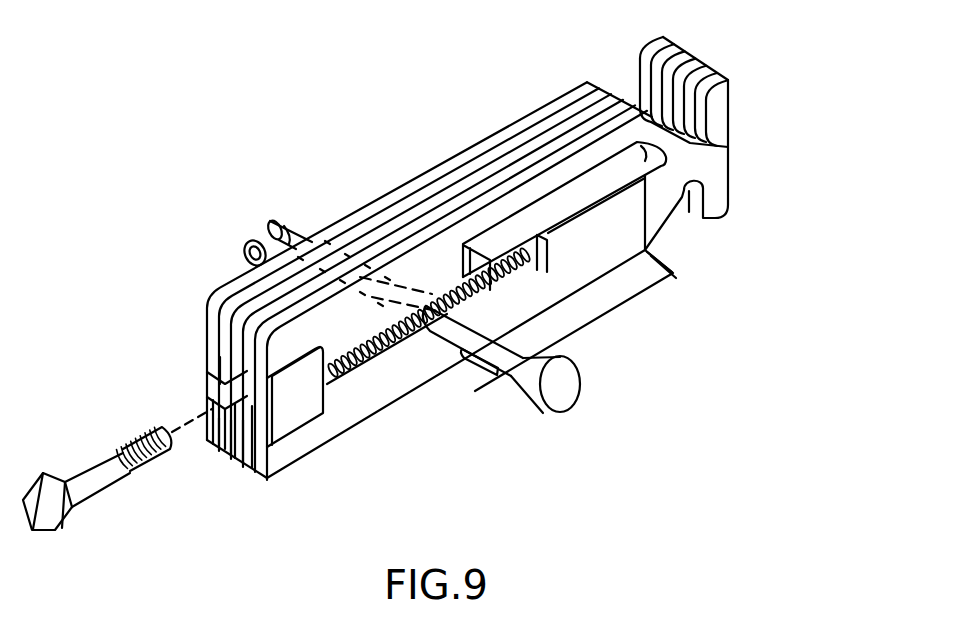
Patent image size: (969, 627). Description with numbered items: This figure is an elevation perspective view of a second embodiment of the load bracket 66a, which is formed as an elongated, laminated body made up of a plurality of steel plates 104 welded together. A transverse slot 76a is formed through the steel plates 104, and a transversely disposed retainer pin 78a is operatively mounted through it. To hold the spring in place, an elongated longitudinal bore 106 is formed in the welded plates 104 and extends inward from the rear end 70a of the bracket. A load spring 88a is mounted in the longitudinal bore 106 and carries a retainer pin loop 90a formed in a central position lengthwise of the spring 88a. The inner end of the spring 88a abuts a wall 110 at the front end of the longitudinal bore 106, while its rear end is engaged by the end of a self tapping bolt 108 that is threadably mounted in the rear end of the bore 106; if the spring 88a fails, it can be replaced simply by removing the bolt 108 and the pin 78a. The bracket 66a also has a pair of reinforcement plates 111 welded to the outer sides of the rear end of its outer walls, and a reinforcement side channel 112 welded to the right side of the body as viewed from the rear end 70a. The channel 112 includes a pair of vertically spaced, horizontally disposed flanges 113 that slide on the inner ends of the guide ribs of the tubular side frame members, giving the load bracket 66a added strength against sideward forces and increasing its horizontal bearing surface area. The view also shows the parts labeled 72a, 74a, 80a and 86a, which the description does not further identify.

The load bracket 66a is at (493, 124).
The rear end 70a is at (243, 352).
The lower hook lug 72a is at (712, 198).
The upper hook 74a is at (718, 90).
The transverse slot 76a is at (352, 372).
The retainer pin 78a is at (503, 364).
The knob 80a is at (565, 388).
The retaining ring 86a is at (242, 253).
The load spring 88a is at (398, 350).
The retainer pin loop 90a is at (440, 298).
The steel plates 104 is at (246, 465).
The longitudinal bore 106 is at (213, 393).
The self tapping bolt 108 is at (110, 492).
The wall 110 is at (523, 272).
The reinforcement plates 111 is at (212, 335).
The reinforcement side channel 112 is at (682, 274).
The flanges 113 is at (668, 148).